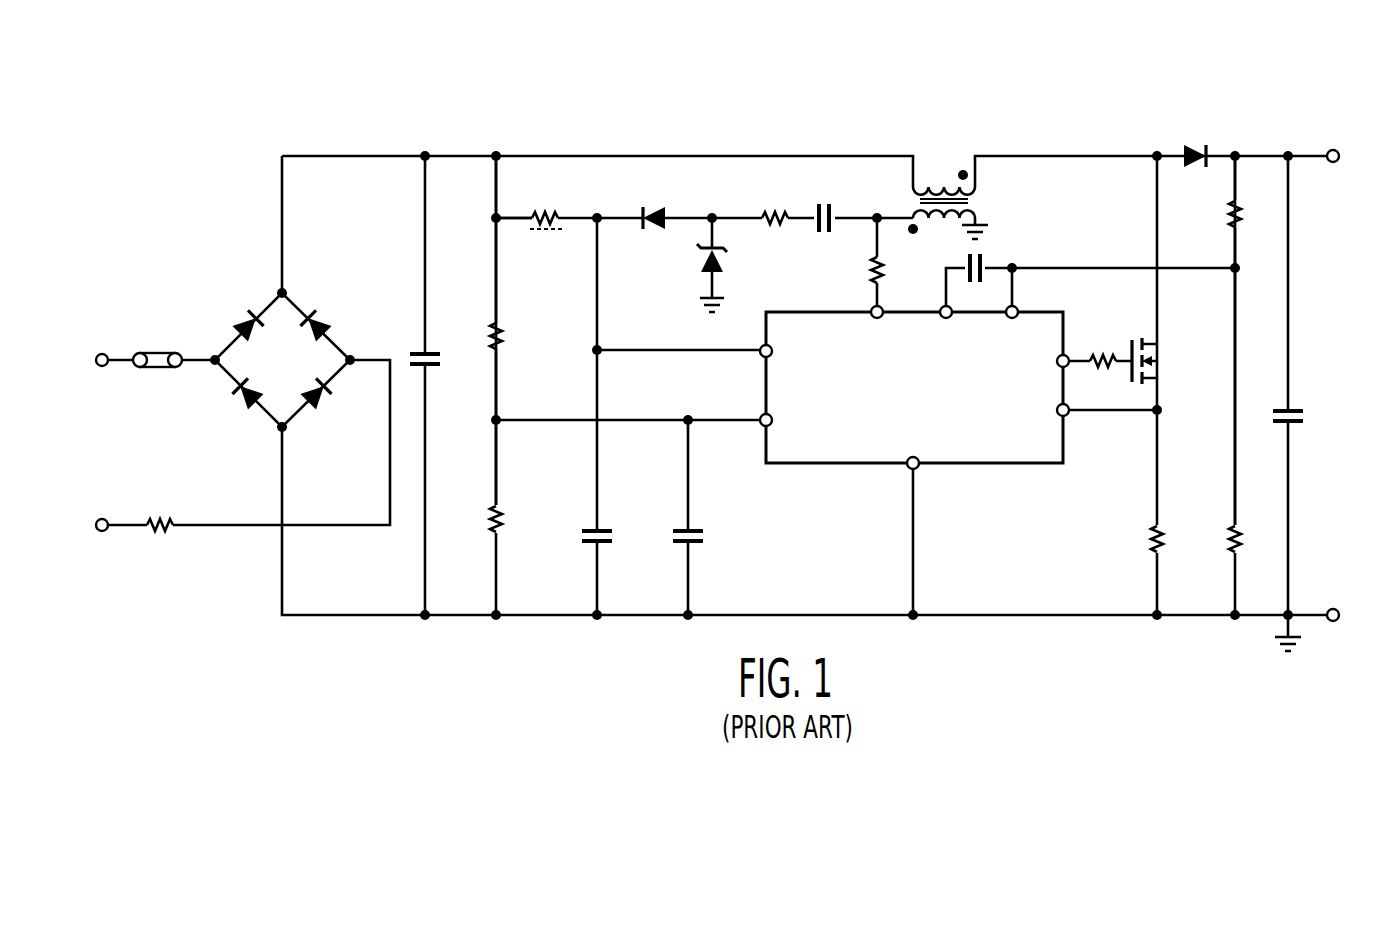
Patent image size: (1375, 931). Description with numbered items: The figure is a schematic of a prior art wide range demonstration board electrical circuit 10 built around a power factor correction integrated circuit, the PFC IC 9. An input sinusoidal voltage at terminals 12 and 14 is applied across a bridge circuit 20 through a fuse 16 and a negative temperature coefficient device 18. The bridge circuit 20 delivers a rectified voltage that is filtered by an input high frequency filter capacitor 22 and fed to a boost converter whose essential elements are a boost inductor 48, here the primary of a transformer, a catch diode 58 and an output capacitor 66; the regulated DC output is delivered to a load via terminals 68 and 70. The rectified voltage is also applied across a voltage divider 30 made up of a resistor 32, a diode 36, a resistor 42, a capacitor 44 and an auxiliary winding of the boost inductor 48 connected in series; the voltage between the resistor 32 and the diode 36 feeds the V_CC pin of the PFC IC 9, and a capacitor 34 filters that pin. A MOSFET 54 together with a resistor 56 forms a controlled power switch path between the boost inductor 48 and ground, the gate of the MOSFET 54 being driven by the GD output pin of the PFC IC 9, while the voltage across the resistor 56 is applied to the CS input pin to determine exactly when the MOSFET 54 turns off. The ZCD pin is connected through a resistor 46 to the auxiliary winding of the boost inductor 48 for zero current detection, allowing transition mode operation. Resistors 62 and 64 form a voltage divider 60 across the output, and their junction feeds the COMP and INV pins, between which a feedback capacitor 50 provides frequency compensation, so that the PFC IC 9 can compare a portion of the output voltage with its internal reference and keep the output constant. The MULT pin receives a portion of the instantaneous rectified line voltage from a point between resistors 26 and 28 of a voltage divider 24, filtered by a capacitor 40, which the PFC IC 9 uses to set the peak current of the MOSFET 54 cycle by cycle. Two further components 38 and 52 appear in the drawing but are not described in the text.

The PFC integrated circuit 9 is at (963, 400).
The wide range demonstration board electrical circuit 10 is at (297, 106).
The terminal 12 is at (102, 350).
The terminal 14 is at (103, 538).
The fuse 16 is at (157, 350).
The negative temperature coefficient (NTC) device 18 is at (168, 538).
The bridge circuit 20 is at (236, 302).
The input high frequency filter capacitor 22 is at (415, 350).
The voltage divider 24 is at (478, 270).
The resistor 26 is at (488, 330).
The resistor 28 is at (492, 532).
The voltage divider 30 is at (508, 206).
The resistor 32 is at (540, 212).
The capacitor 34 is at (590, 530).
The diode 36 is at (666, 210).
The zener diode 38 is at (706, 274).
The capacitor 40 is at (695, 530).
The resistor 42 is at (770, 210).
The capacitor 44 is at (836, 214).
The resistor 46 is at (870, 272).
The boost inductor 48 is at (940, 183).
The feedback capacitor 50 is at (990, 262).
The resistor 52 is at (1096, 352).
The MOSFET 54 is at (1160, 361).
The resistor 56 is at (1152, 540).
The catch diode 58 is at (1193, 147).
The voltage divider 60 is at (1247, 190).
The resistor 62 is at (1228, 214).
The resistor 64 is at (1240, 540).
The output capacitor 66 is at (1300, 412).
The terminal 68 is at (1333, 168).
The terminal 70 is at (1337, 630).